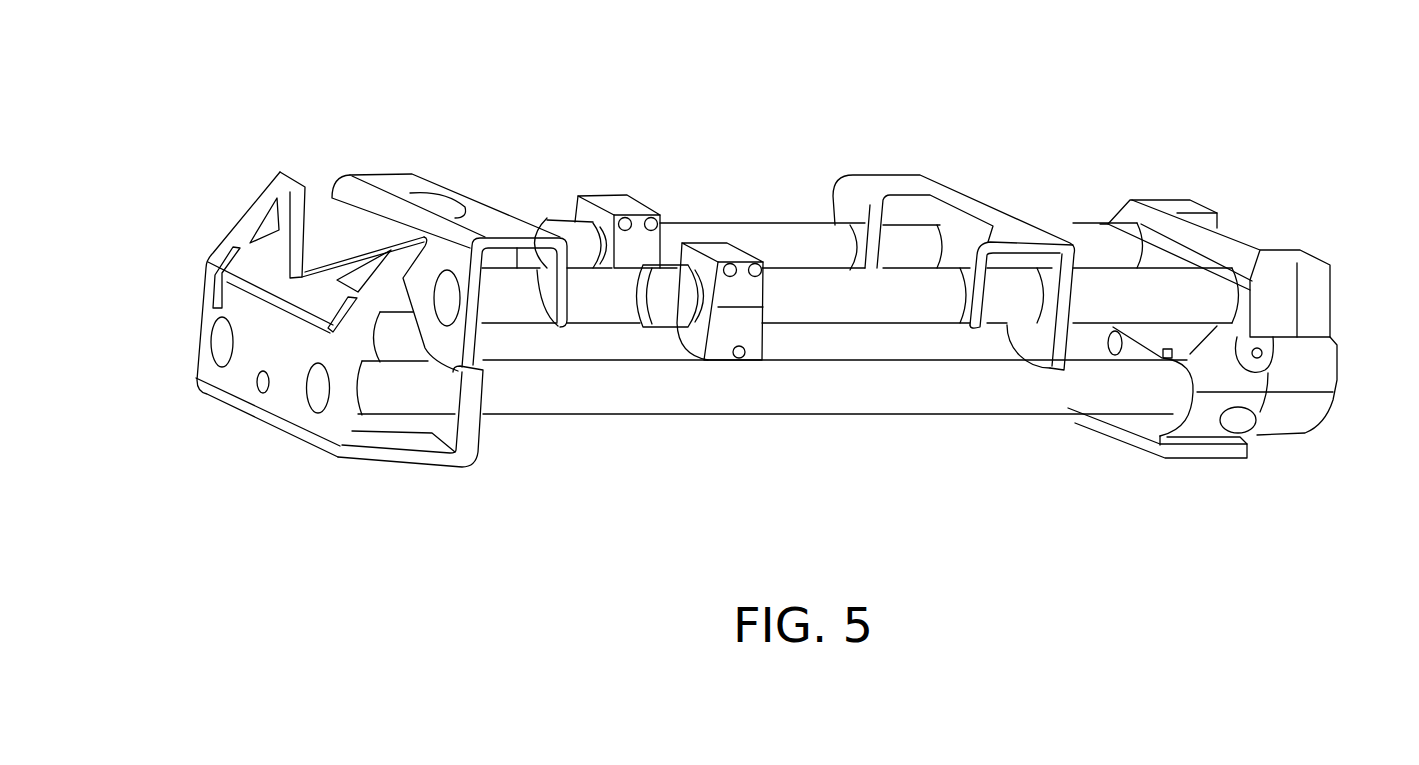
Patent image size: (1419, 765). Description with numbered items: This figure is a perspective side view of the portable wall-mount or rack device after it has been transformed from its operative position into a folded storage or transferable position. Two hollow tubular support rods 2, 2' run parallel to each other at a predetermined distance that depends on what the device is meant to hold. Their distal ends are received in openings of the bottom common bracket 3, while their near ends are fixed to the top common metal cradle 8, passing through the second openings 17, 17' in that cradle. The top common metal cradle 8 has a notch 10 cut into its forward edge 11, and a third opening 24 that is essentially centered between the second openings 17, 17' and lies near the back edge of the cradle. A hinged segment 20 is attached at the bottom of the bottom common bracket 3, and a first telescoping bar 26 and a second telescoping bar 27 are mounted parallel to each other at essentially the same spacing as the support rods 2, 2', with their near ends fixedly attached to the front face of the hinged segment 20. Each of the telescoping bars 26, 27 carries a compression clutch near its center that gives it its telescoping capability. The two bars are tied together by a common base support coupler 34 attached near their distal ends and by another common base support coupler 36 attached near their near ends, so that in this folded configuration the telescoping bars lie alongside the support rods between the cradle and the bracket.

The support rod 2 is at (835, 460).
The support rod 2' is at (860, 364).
The bottom common bracket 3 is at (1182, 457).
The top common metal cradle 8 is at (403, 508).
The notch 10 is at (303, 277).
The forward edge 11 is at (215, 257).
The second opening 17 is at (292, 461).
The second opening 17' is at (138, 358).
The hinged segment 20 is at (1275, 326).
The third opening 24 is at (262, 378).
The first telescoping bar 26 is at (593, 193).
The second telescoping bar 27 is at (703, 232).
The common base support coupler 34 is at (484, 230).
The common base support coupler 36 is at (898, 184).